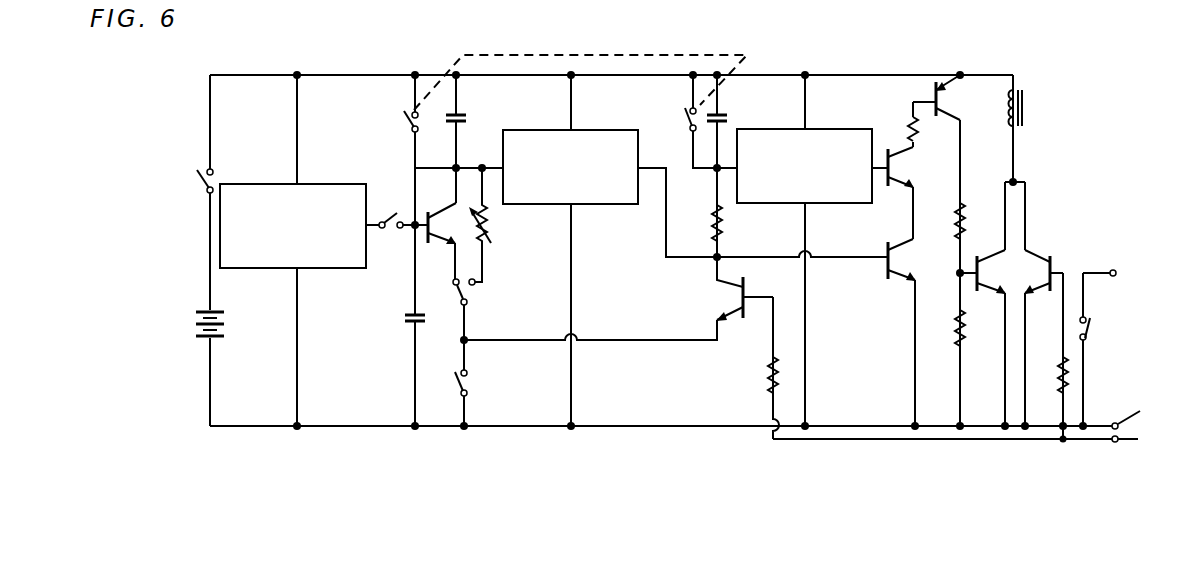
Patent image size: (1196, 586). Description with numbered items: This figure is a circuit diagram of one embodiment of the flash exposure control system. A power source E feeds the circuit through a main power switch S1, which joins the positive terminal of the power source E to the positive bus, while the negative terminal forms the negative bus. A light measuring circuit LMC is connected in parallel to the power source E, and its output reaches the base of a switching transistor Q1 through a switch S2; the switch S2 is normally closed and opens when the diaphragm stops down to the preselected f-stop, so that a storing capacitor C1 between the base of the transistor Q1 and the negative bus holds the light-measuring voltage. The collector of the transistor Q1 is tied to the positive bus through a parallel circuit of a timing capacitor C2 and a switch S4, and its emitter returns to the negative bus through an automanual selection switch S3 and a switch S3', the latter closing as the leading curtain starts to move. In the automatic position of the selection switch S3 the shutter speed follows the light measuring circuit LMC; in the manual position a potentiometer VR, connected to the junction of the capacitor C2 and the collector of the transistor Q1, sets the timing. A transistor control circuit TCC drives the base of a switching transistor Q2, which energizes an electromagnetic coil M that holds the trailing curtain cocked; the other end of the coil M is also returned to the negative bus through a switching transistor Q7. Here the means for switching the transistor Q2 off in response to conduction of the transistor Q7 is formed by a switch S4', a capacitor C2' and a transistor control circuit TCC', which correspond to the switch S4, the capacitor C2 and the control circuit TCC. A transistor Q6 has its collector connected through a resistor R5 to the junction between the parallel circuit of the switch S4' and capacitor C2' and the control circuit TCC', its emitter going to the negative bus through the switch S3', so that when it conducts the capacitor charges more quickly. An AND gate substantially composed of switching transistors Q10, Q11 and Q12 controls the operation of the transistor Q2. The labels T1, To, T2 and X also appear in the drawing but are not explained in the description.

The main power switch S1 is at (200, 186).
The power source E is at (196, 322).
The light measuring circuit LMC is at (262, 184).
The switch S2 is at (391, 232).
The storing capacitor C1 is at (404, 319).
The switch S4 is at (388, 114).
The timing capacitor C2 is at (480, 112).
The switching transistor Q1 is at (440, 205).
The potentiometer VR is at (490, 236).
The automanual selection switch S3 is at (492, 311).
The switch S3' is at (494, 382).
The transistor control circuit TCC is at (570, 191).
The switch S4' is at (658, 113).
The capacitor C2' is at (745, 112).
The resistor R5 is at (718, 222).
The transistor control circuit TCC' is at (804, 191).
The transistor Q6 is at (730, 296).
The switching transistor Q11 is at (904, 152).
The switching transistor Q12 is at (946, 118).
The switching transistor Q10 is at (906, 280).
The switching transistor Q2 is at (988, 294).
The electromagnetic coil M is at (1026, 108).
The switching transistor Q7 is at (1032, 258).
The terminal T1 is at (1131, 277).
The synchro switch X is at (1094, 326).
The terminal To is at (1139, 412).
The terminal T2 is at (1142, 442).